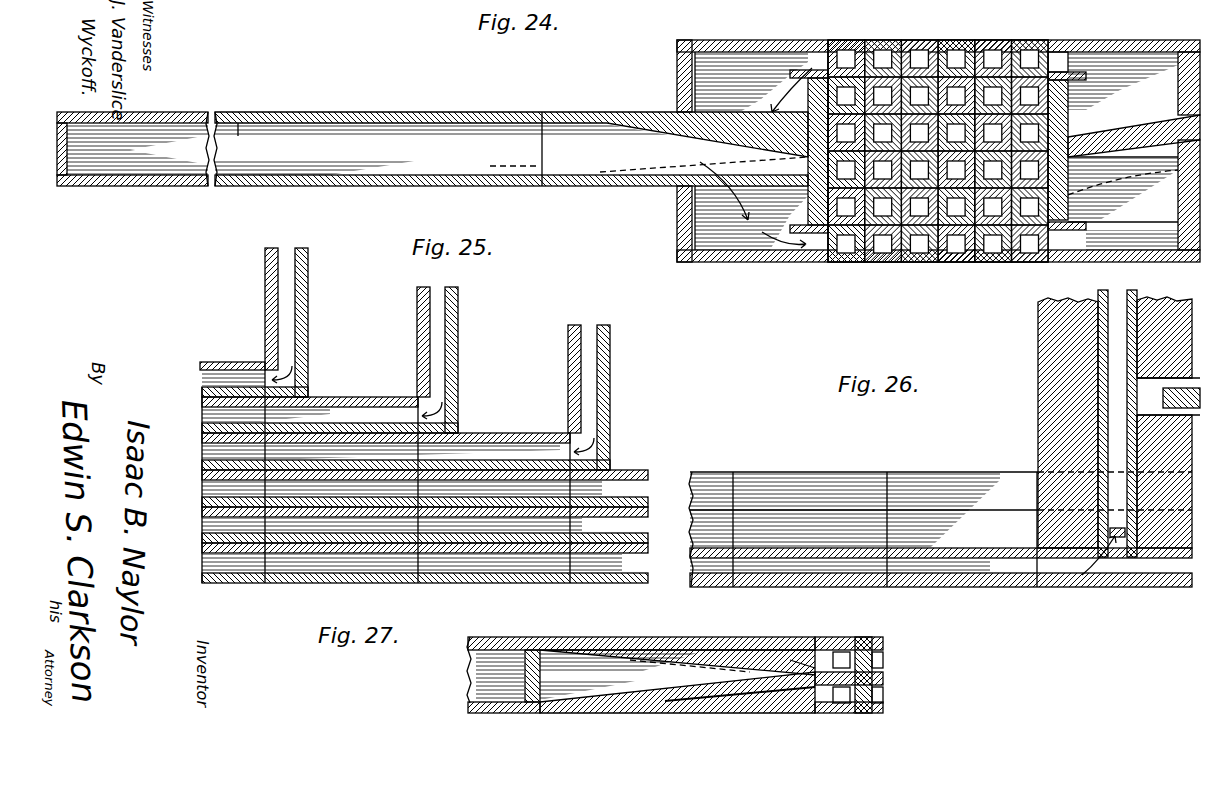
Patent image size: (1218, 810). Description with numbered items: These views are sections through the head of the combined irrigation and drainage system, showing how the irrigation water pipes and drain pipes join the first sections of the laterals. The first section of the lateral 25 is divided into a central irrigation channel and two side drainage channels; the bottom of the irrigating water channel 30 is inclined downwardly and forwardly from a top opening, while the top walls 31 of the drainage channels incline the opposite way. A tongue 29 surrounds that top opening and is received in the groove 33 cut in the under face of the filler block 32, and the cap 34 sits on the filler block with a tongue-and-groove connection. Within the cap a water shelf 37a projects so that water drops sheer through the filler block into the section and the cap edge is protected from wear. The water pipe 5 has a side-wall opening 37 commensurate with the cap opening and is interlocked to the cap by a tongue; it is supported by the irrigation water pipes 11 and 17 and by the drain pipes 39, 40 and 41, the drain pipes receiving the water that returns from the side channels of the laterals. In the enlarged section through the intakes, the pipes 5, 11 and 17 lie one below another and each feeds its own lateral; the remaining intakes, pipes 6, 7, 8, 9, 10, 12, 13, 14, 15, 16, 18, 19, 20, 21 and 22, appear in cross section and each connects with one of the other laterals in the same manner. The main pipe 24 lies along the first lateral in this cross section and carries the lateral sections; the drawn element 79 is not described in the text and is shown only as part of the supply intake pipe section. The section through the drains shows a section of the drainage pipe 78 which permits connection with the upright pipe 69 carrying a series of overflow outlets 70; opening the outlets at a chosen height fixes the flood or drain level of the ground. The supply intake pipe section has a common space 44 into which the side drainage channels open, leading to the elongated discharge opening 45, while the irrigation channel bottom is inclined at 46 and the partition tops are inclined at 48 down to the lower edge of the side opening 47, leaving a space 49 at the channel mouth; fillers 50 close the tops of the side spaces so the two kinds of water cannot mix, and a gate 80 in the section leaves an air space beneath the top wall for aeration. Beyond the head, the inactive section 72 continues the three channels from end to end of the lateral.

In FIG. 24, the water pipe 5 is at (848, 54).
In FIG. 25, the water pipe 5 is at (308, 300).
In FIG. 24, the irrigation water pipe 6 is at (904, 40).
In FIG. 24, the irrigation water pipe 7 is at (960, 58).
In FIG. 24, the irrigation water pipe 8 is at (995, 58).
In FIG. 24, the irrigation water pipe 9 is at (1030, 58).
In FIG. 24, the irrigation water pipe 10 is at (1050, 52).
In FIG. 24, the irrigation water pipe 11 is at (881, 58).
In FIG. 25, the irrigation water pipe 11 is at (458, 343).
In FIG. 24, the irrigation water pipe 12 is at (883, 95).
In FIG. 24, the irrigation water pipe 13 is at (919, 95).
In FIG. 24, the irrigation water pipe 14 is at (956, 95).
In FIG. 24, the irrigation water pipe 15 is at (993, 95).
In FIG. 24, the irrigation water pipe 16 is at (1030, 95).
In FIG. 24, the irrigation water pipe 17 is at (922, 58).
In FIG. 25, the irrigation water pipe 17 is at (610, 380).
In FIG. 24, the irrigation water pipe 18 is at (883, 132).
In FIG. 27, the irrigation water pipe 18 is at (849, 641).
In FIG. 24, the irrigation water pipe 19 is at (919, 132).
In FIG. 27, the irrigation water pipe 19 is at (885, 662).
In FIG. 24, the irrigation water pipe 20 is at (956, 132).
In FIG. 24, the irrigation water pipe 21 is at (993, 132).
In FIG. 24, the irrigation water pipe 22 is at (1030, 132).
In FIG. 24, the supply pipe 24 is at (511, 150).
In FIG. 24, the first section of the lateral 25 is at (585, 188).
In FIG. 24, the tongue 29 is at (677, 110).
In FIG. 24, the bottom of the irrigating water channel 30 is at (630, 188).
In FIG. 24, the top walls of the drainage pipes 31 is at (617, 128).
In FIG. 24, the filler block 32 is at (677, 107).
In FIG. 24, the groove 33 is at (677, 112).
In FIG. 24, the cap 34 is at (901, 135).
In FIG. 24, the opening 37 is at (832, 45).
In FIG. 24, the water shelf 37a is at (796, 70).
In FIG. 24, the drain pipe 39 is at (802, 234).
In FIG. 25, the drain pipe 39 is at (202, 490).
In FIG. 27, the drain pipe 39 is at (818, 712).
In FIG. 24, the drain pipe 40 is at (840, 252).
In FIG. 25, the drain pipe 40 is at (202, 530).
In FIG. 24, the drain pipe 41 is at (882, 252).
In FIG. 25, the drain pipe 41 is at (202, 567).
In FIG. 27, the common space 44 is at (798, 691).
In FIG. 27, the elongated discharge opening 45 is at (815, 704).
In FIG. 27, the inclined bottom of the irrigation water channel 46 is at (733, 688).
In FIG. 26, the elongated laterally disposed opening 47 is at (1145, 398).
In FIG. 27, the elongated laterally disposed opening 47 is at (818, 650).
In FIG. 27, the inclined tops of the partitions 48 is at (740, 657).
In FIG. 27, the space 49 is at (790, 660).
In FIG. 27, the fillers 50 is at (575, 637).
In FIG. 26, the upright pipe 69 is at (1105, 352).
In FIG. 26, the overflow outlet 70 is at (1140, 390).
In FIG. 24, the inactive section 72 is at (136, 188).
In FIG. 26, the section of the drainage pipe 78 is at (1115, 588).
In FIG. 27, the plug 79 is at (473, 689).
In FIG. 27, the gate 80 is at (473, 668).